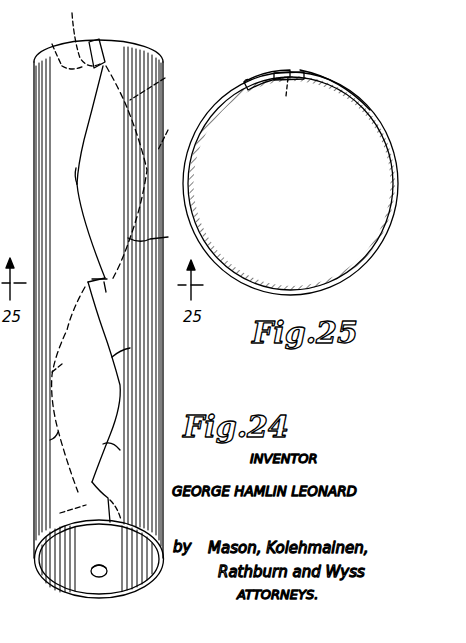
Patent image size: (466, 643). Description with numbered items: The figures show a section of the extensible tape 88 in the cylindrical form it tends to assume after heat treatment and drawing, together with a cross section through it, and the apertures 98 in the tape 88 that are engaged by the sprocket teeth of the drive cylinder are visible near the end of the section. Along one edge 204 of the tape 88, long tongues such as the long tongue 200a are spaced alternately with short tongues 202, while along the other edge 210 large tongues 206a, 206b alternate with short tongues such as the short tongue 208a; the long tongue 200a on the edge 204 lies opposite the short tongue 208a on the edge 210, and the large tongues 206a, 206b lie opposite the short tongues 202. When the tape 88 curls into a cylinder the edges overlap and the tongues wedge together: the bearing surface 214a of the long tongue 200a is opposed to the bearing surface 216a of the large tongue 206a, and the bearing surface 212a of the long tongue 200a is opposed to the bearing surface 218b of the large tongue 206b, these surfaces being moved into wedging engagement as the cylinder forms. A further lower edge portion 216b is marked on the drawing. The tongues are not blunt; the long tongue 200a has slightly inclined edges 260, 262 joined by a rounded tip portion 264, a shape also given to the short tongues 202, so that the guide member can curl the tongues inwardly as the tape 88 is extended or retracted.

In FIG. 24, the tape 88 is at (42, 583).
In FIG. 25, the tape 88 is at (400, 252).
In FIG. 24, the apertures 98 is at (103, 566).
In FIG. 24, the long tongue 200a is at (140, 110).
In FIG. 25, the long tongue 200a is at (356, 104).
In FIG. 24, the short tongues 202 is at (130, 348).
In FIG. 24, the edge 204 is at (121, 460).
In FIG. 24, the large tongue 206a is at (74, 34).
In FIG. 24, the large tongue 206b is at (52, 372).
In FIG. 25, the large tongue 206b is at (252, 92).
In FIG. 24, the short tongue 208a is at (77, 186).
In FIG. 25, the short tongue 208a is at (247, 80).
In FIG. 24, the edge 210 is at (50, 440).
In FIG. 24, the bearing surface 212a is at (126, 295).
In FIG. 25, the bearing surface 212a is at (277, 72).
In FIG. 24, the bearing surface 214a is at (105, 45).
In FIG. 24, the bearing surface 216a is at (50, 46).
In FIG. 24, the lower coil end 216b is at (60, 513).
In FIG. 24, the bearing surface 218b is at (96, 278).
In FIG. 25, the bearing surface 218b is at (277, 104).
In FIG. 24, the inclined edge 260 is at (164, 82).
In FIG. 24, the inclined edge 262 is at (162, 247).
In FIG. 24, the rounded tip portion 264 is at (178, 129).